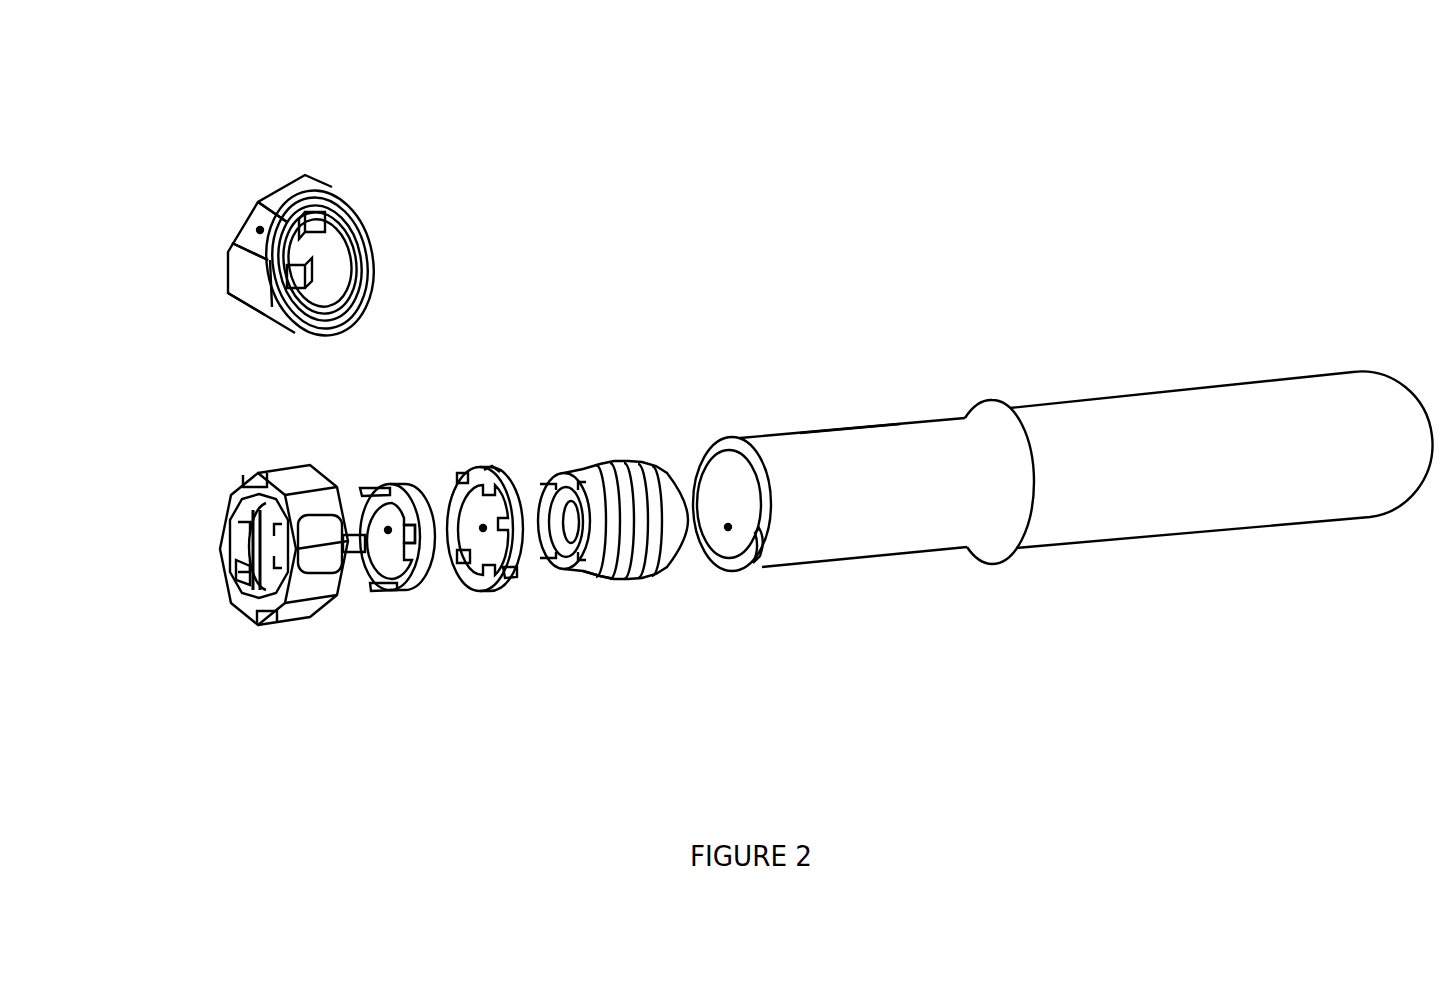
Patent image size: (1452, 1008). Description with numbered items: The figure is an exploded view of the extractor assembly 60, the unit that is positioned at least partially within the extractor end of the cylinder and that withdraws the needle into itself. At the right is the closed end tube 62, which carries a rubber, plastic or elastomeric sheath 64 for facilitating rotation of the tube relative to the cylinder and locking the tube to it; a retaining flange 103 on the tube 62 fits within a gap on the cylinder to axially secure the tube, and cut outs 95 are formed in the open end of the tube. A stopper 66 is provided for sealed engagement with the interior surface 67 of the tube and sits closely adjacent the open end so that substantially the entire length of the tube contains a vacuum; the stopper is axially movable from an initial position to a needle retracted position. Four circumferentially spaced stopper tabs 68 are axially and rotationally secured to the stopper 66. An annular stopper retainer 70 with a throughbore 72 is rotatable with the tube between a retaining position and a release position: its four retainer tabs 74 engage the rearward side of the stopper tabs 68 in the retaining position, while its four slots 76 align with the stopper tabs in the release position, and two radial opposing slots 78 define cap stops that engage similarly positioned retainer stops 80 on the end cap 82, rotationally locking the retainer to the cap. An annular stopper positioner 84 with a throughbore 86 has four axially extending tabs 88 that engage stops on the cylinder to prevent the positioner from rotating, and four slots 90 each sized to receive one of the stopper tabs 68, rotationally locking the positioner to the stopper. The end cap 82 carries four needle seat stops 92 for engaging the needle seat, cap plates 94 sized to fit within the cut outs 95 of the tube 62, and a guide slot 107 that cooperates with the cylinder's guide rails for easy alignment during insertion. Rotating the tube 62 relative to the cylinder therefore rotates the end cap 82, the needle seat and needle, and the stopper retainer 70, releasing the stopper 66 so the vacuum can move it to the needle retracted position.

The extractor assembly 60 is at (803, 422).
The closed end tube 62 is at (874, 419).
The sheath 64 is at (1151, 389).
The stopper 66 is at (598, 462).
The interior surface 67 is at (729, 529).
The stopper tab 68 is at (593, 567).
The stopper retainer 70 is at (487, 598).
The throughbore 72 is at (485, 526).
The retainer tab 74 is at (462, 565).
The slot 76 is at (493, 466).
The radial opposing slot 78 is at (517, 584).
The retainer stop 80 is at (347, 215).
The end cap 82 is at (277, 172).
The stopper positioner 84 is at (407, 480).
The throughbore 86 is at (387, 527).
The axially extending tab 88 is at (377, 597).
The slot 90 is at (411, 592).
The needle seat stop 92 is at (237, 573).
The cap plate 94 is at (373, 222).
The cut out 95 is at (771, 558).
The retaining flange 103 is at (1014, 561).
The guide slot 107 is at (258, 228).